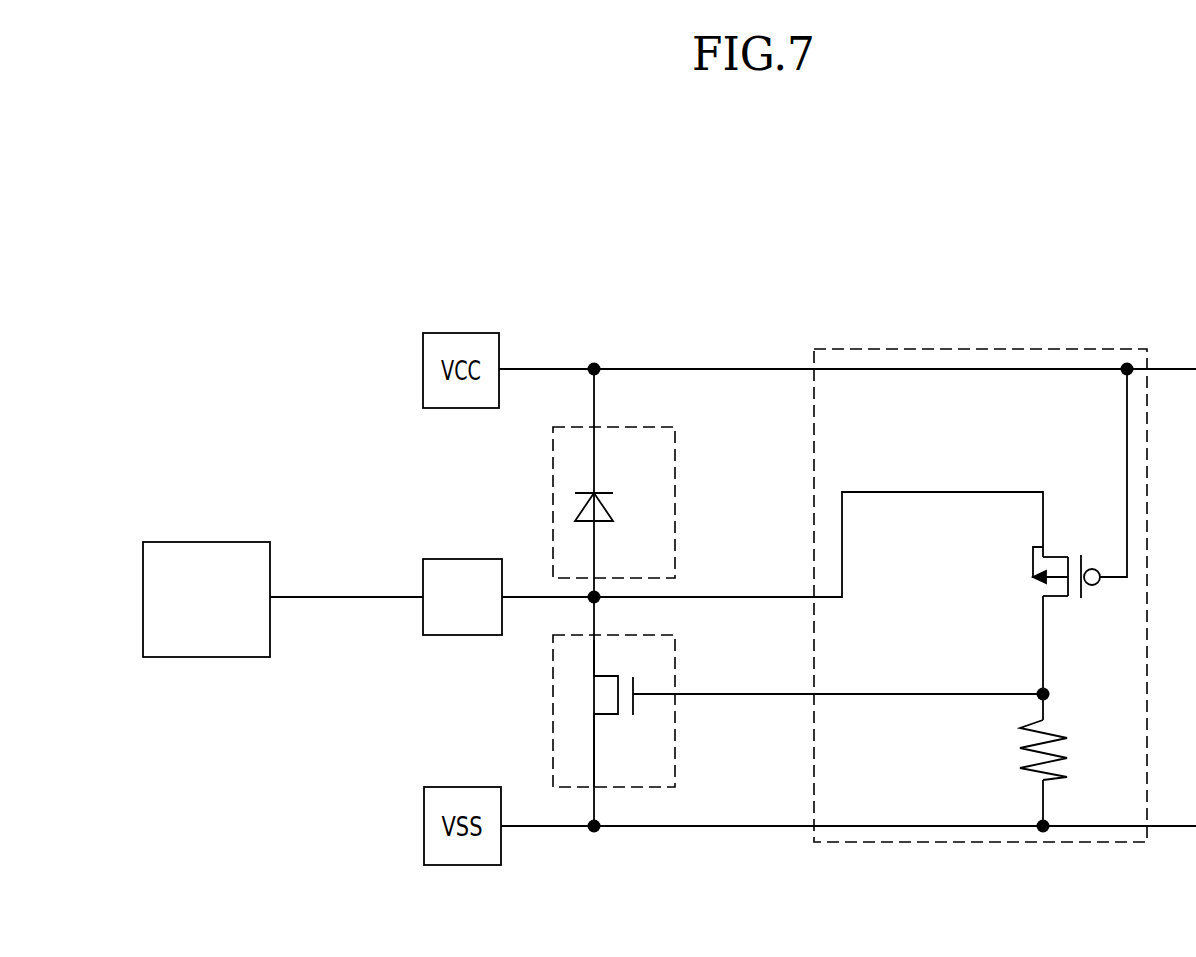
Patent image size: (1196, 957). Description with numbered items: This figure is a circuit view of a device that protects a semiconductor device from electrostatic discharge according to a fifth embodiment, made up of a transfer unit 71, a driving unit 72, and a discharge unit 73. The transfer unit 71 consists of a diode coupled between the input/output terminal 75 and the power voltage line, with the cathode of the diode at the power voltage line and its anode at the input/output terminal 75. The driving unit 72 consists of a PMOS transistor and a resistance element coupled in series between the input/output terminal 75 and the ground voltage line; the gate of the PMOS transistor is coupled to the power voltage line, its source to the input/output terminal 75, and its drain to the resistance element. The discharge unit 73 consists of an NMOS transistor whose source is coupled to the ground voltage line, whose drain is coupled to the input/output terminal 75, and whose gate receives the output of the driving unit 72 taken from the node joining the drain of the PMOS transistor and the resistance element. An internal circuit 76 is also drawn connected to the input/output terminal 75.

The transfer unit 71 is at (676, 455).
The driving unit 72 is at (980, 349).
The discharge unit 73 is at (676, 663).
The input/output terminal 75 is at (462, 559).
The internal circuit 76 is at (207, 542).